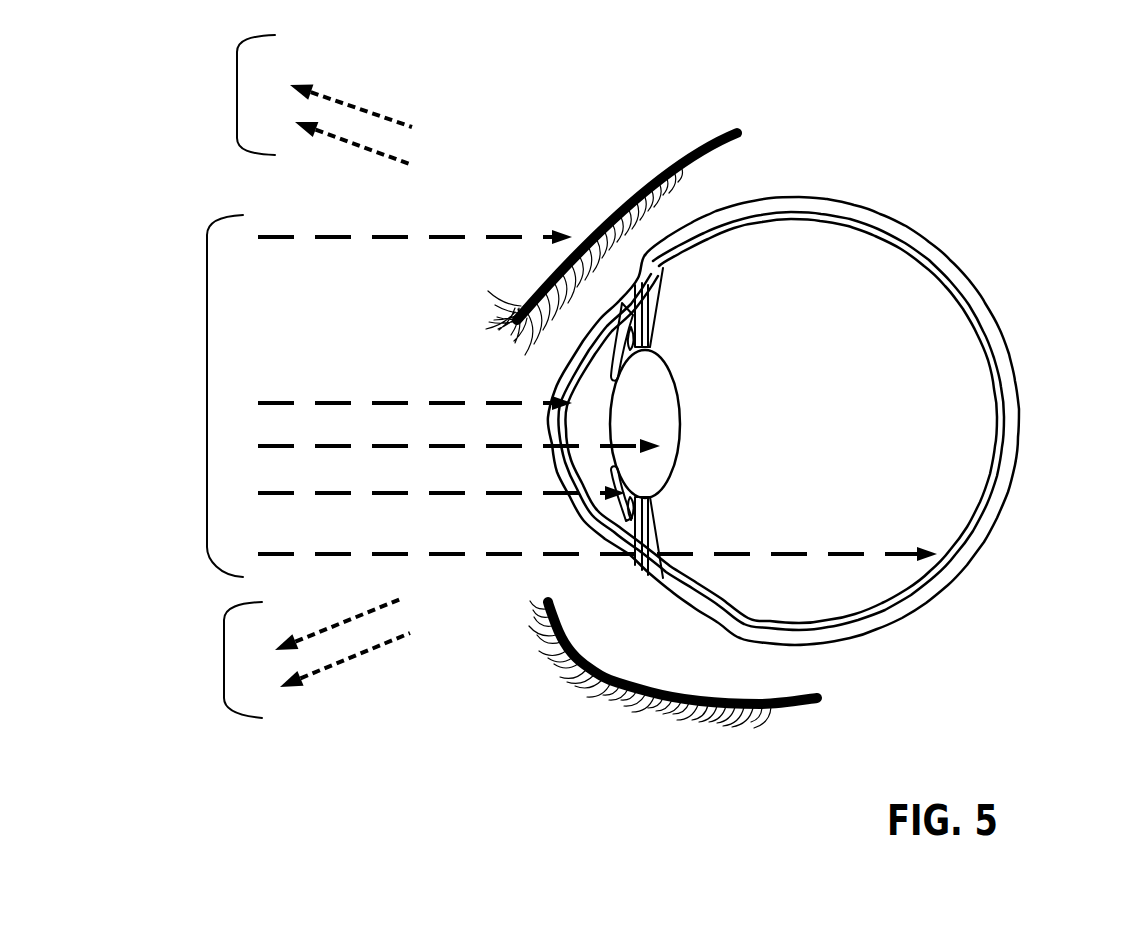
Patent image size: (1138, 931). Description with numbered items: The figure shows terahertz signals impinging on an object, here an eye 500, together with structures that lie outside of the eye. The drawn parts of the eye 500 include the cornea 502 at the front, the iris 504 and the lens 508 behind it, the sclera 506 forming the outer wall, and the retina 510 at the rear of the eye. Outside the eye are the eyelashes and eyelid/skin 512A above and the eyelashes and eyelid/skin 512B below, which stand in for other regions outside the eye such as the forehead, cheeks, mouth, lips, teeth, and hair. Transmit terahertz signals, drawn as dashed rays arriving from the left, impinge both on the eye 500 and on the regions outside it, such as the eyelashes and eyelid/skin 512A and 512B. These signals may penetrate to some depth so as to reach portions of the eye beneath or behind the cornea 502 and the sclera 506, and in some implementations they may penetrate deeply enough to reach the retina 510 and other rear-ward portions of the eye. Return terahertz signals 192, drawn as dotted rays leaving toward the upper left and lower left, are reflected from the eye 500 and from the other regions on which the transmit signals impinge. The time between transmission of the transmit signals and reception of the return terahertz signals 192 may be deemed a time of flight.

The return terahertz signals 192 is at (237, 95).
The eye 500 is at (948, 134).
The cornea 502 is at (555, 383).
The iris 504 is at (640, 346).
The sclera 506 is at (653, 588).
The lens 508 is at (667, 410).
The retina 510 is at (970, 504).
The eyelashes and eyelid/skin 512A is at (592, 218).
The eyelashes and eyelid/skin 512B is at (553, 655).